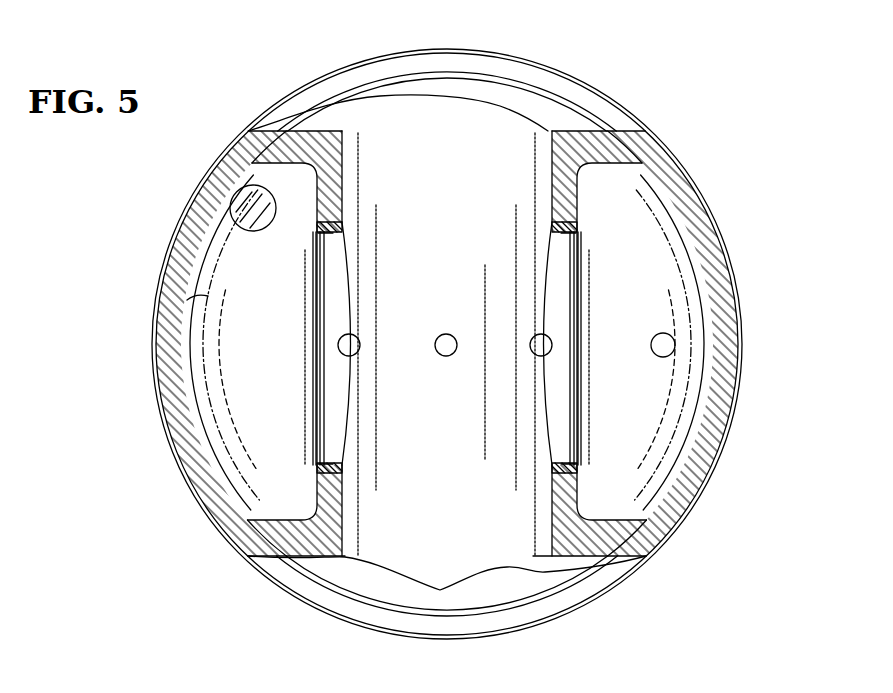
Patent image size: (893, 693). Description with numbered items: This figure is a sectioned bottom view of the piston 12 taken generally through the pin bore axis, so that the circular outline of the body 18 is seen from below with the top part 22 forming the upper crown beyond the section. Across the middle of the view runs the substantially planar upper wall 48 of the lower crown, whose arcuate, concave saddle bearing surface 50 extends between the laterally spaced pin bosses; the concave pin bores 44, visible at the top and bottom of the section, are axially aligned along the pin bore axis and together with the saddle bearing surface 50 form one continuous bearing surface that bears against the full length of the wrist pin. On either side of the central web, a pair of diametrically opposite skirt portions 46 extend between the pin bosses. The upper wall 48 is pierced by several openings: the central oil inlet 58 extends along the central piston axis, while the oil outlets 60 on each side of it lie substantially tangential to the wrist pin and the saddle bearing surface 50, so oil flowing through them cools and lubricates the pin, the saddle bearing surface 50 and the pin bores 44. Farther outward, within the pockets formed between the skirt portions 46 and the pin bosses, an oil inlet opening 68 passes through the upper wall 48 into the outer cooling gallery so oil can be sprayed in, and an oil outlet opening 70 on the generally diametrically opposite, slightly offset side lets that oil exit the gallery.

The piston 12 is at (701, 134).
The body 18 is at (596, 104).
The top part 22 is at (252, 571).
The pin bores 44 is at (350, 164).
The skirt portions 46 is at (157, 346).
The upper wall 48 is at (185, 306).
The saddle bearing surface 50 is at (403, 258).
The oil inlet 58 is at (446, 333).
The oil outlets 60 is at (337, 345).
The oil inlet opening 68 is at (238, 226).
The oil outlet opening 70 is at (663, 332).